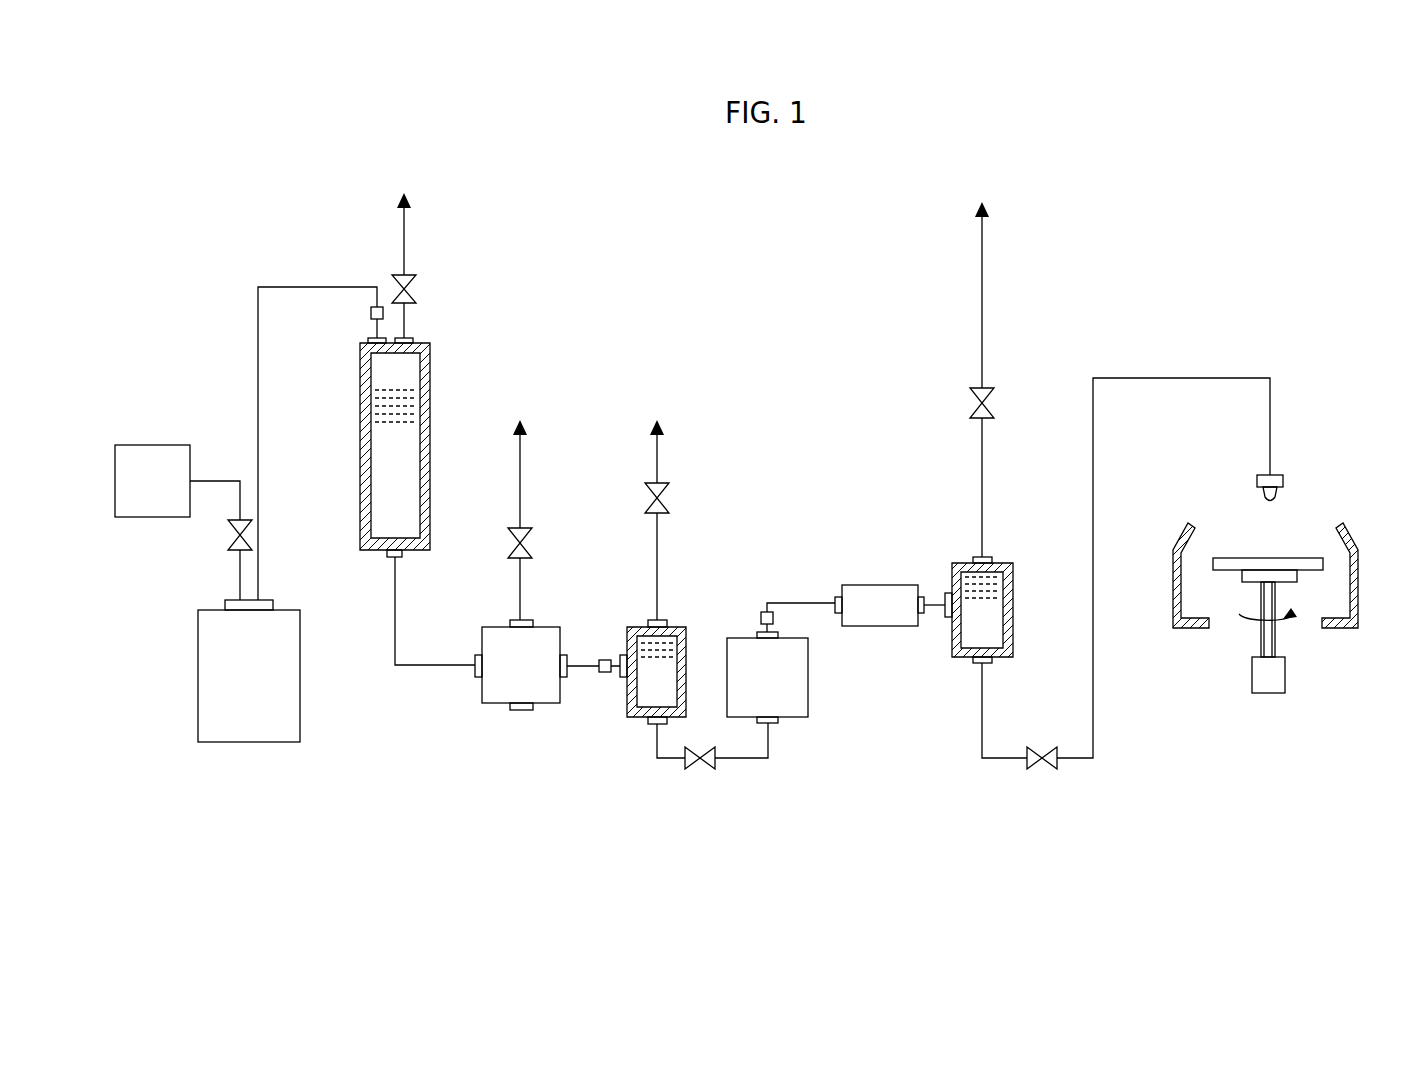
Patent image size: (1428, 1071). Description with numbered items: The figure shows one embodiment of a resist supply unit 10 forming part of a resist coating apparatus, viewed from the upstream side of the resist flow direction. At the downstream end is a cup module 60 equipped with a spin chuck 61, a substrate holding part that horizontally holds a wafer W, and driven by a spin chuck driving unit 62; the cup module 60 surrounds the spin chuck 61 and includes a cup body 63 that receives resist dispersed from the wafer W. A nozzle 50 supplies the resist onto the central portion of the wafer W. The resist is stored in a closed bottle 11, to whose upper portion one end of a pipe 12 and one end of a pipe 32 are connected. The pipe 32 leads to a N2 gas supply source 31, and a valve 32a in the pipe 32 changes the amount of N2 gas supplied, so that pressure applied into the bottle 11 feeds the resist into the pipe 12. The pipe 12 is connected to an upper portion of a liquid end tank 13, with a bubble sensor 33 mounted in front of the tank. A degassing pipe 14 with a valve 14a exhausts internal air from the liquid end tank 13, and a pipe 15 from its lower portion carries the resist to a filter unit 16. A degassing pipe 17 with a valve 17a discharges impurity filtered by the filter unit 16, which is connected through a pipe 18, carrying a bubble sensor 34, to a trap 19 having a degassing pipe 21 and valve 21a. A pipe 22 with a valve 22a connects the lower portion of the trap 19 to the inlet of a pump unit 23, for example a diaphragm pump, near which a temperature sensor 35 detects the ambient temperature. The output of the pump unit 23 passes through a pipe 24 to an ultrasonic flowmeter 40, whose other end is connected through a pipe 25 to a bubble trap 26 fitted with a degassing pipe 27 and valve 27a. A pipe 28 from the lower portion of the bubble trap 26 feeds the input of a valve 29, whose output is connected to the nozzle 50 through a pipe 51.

The resist supply unit 10 is at (764, 297).
The bottle 11 is at (250, 744).
The pipe 12 is at (258, 372).
The liquid end tank 13 is at (360, 443).
The degassing pipe 14 is at (404, 232).
The valve 14a is at (416, 292).
The pipe 15 is at (393, 632).
The filter unit 16 is at (522, 712).
The degassing pipe 17 is at (520, 489).
The valve 17a is at (532, 545).
The pipe 18 is at (587, 676).
The trap 19 is at (637, 628).
The degassing pipe 21 is at (658, 550).
The valve 21a is at (669, 499).
The pipe 22 is at (758, 765).
The valve 22a is at (693, 770).
The pump unit 23 is at (808, 681).
The pipe 24 is at (785, 603).
The pipe 25 is at (937, 612).
The bubble trap 26 is at (1014, 611).
The degassing pipe 27 is at (984, 322).
The valve 27a is at (994, 405).
The pipe 28 is at (980, 703).
The valve 29 is at (1040, 770).
The N2 gas supply source 31 is at (143, 445).
The pipe 32 is at (228, 480).
The valve 32a is at (228, 542).
The bubble sensor 33 is at (370, 312).
The bubble sensor 34 is at (605, 655).
The temperature sensor 35 is at (774, 618).
The ultrasonic flowmeter 40 is at (878, 585).
The nozzle 50 is at (1285, 482).
The pipe 51 is at (1200, 377).
The cup module 60 is at (1290, 625).
The spin chuck 61 is at (1297, 578).
The spin chuck driving unit 62 is at (1238, 695).
The cup body 63 is at (1355, 541).
The wafer W is at (1232, 558).